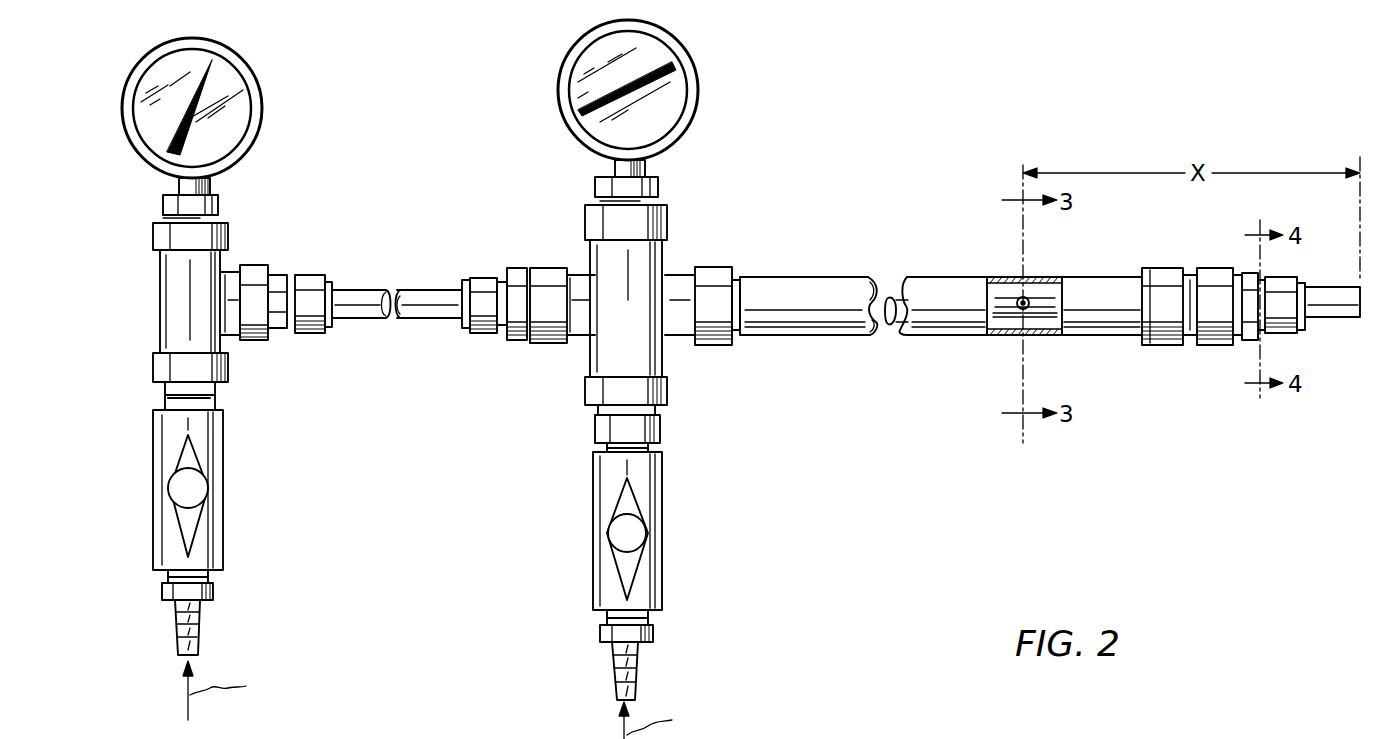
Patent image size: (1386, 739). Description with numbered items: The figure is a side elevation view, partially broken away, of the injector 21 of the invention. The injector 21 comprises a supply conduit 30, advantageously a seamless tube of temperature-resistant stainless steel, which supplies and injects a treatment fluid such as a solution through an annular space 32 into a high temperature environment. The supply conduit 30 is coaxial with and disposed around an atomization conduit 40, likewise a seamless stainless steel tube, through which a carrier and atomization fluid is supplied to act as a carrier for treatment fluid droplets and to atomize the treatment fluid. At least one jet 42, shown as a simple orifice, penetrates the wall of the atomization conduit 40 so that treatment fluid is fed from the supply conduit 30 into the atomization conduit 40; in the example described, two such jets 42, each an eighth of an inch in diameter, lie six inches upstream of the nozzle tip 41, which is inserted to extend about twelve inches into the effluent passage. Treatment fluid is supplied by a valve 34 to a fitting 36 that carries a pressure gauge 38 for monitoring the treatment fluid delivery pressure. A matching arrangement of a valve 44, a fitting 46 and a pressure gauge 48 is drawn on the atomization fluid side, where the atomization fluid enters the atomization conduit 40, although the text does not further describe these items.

The injector 21 is at (862, 266).
The supply conduit 30 is at (924, 338).
The annular space 32 is at (1056, 283).
The valve 34 is at (663, 540).
The fitting 36 is at (667, 268).
The pressure gauge 38 is at (703, 93).
The atomization conduit 40 is at (361, 290).
The nozzle tip 41 is at (1364, 312).
The jet 42 is at (1025, 298).
The atomization fluid valve 44 is at (225, 515).
The atomization fluid tee fitting 46 is at (224, 270).
The atomization fluid pressure gauge 48 is at (262, 93).